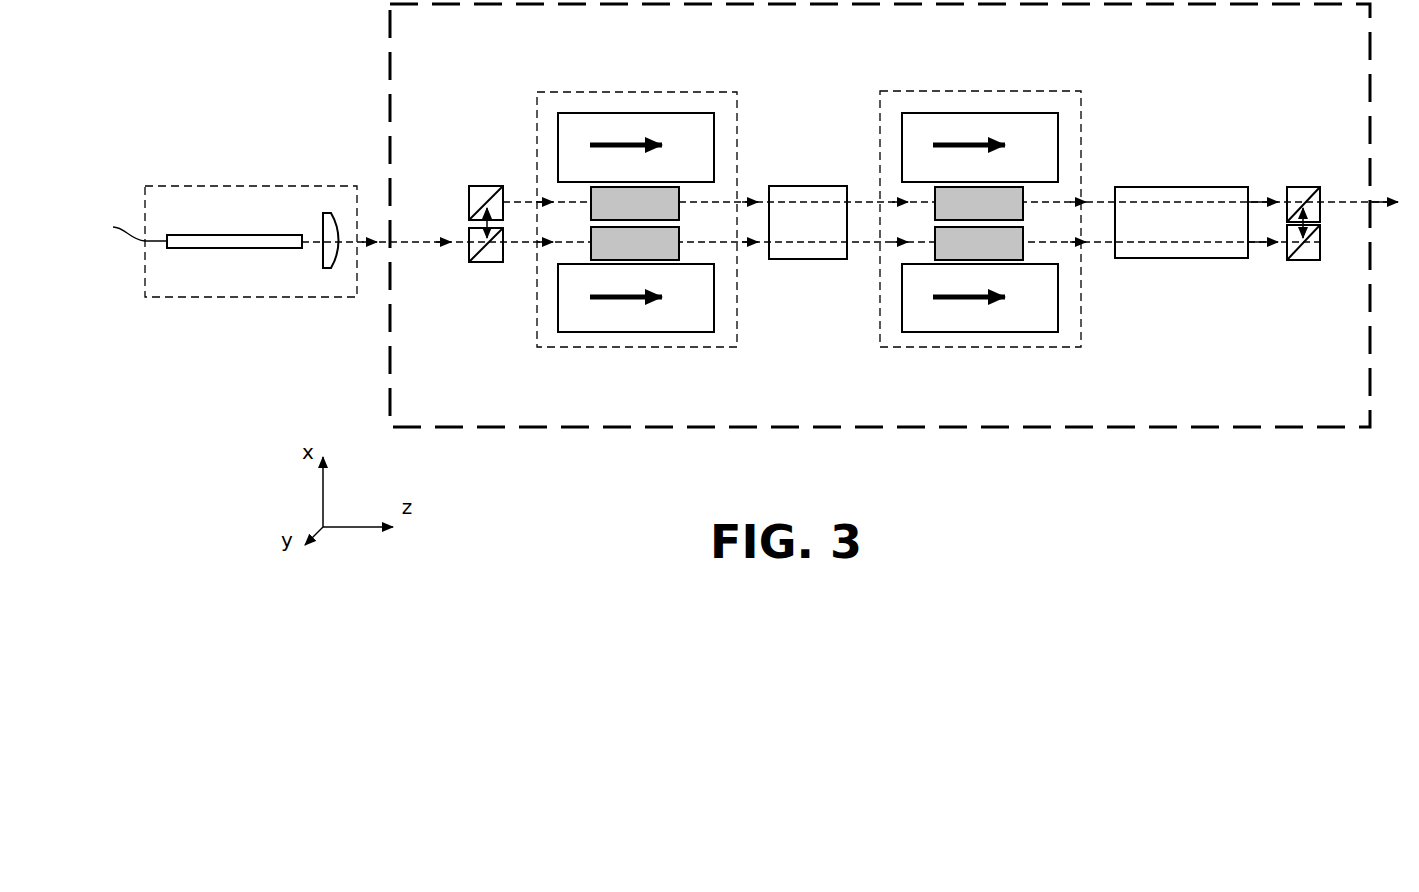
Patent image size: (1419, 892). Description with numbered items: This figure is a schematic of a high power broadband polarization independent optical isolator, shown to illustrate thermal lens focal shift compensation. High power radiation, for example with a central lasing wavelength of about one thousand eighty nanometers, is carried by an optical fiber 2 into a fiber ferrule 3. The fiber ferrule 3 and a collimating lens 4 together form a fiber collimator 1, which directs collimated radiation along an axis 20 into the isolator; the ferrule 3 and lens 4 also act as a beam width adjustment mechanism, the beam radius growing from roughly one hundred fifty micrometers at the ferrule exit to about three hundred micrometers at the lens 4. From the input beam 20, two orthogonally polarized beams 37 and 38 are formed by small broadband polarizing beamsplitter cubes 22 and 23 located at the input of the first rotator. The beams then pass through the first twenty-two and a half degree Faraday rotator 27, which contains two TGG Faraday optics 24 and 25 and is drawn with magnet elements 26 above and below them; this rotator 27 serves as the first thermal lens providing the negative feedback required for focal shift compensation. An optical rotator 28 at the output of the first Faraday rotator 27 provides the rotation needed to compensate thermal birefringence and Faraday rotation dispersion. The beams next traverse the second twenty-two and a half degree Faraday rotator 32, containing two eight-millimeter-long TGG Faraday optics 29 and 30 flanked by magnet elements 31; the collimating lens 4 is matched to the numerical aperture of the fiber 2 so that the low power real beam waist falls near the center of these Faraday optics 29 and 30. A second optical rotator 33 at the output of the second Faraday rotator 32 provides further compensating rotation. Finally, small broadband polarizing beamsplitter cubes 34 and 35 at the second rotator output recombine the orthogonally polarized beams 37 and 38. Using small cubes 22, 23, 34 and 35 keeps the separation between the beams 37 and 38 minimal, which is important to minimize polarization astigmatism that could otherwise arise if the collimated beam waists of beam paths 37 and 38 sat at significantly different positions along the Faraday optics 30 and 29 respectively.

The fiber collimator 1 is at (218, 181).
The optical fiber 2 is at (123, 230).
The fiber ferrule 3 is at (202, 251).
The collimating lens 4 is at (337, 270).
The axis / input beam 20 is at (413, 230).
The broadband polarizing beamsplitter 22 is at (479, 266).
The broadband polarizing beamsplitter 23 is at (460, 195).
The TGG Faraday optic 24 is at (668, 247).
The TGG Faraday optic 25 is at (668, 197).
The magnet 26 is at (582, 128).
The first 22.5° Faraday rotator 27 is at (672, 85).
The optical rotator 28 is at (814, 181).
The TGG Faraday optic 29 is at (1005, 197).
The TGG Faraday optic 30 is at (1005, 247).
The magnet 31 is at (925, 128).
The second 22.5° Faraday rotator 32 is at (1015, 85).
The optical rotator 33 is at (1153, 180).
The polarizing beamsplitter cube 34 is at (1325, 242).
The polarizing beamsplitter cube 35 is at (1325, 197).
The orthogonally polarized beam 37 is at (535, 254).
The orthogonally polarized beam 38 is at (524, 194).